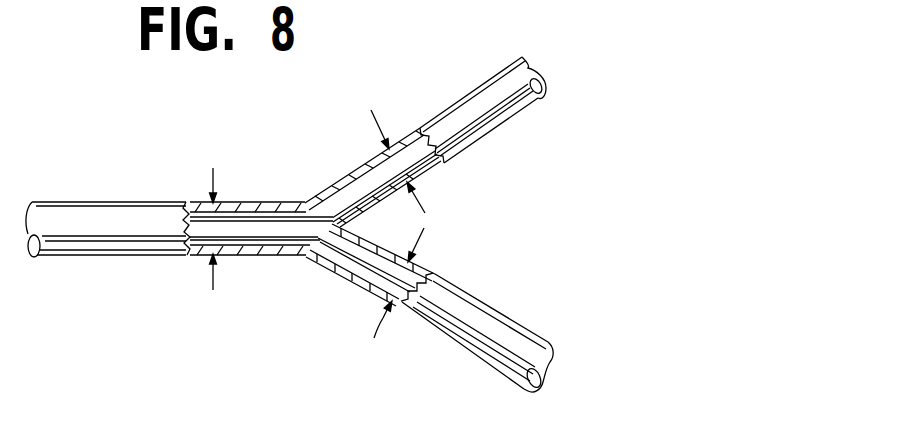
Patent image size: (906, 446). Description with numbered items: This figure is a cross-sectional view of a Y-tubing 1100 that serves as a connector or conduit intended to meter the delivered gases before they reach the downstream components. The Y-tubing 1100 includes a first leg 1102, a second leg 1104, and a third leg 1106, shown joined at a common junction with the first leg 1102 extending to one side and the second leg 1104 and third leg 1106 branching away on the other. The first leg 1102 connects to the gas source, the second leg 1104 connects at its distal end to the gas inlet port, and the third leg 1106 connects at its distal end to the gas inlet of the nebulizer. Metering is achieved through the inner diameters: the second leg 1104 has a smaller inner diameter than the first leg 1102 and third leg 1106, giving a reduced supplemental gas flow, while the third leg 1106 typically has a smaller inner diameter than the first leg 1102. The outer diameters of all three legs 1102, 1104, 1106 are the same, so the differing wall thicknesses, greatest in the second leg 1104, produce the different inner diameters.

The Y-tubing 1100 is at (459, 262).
The first leg 1102 is at (90, 240).
The second leg 1104 is at (475, 98).
The third leg 1106 is at (500, 355).